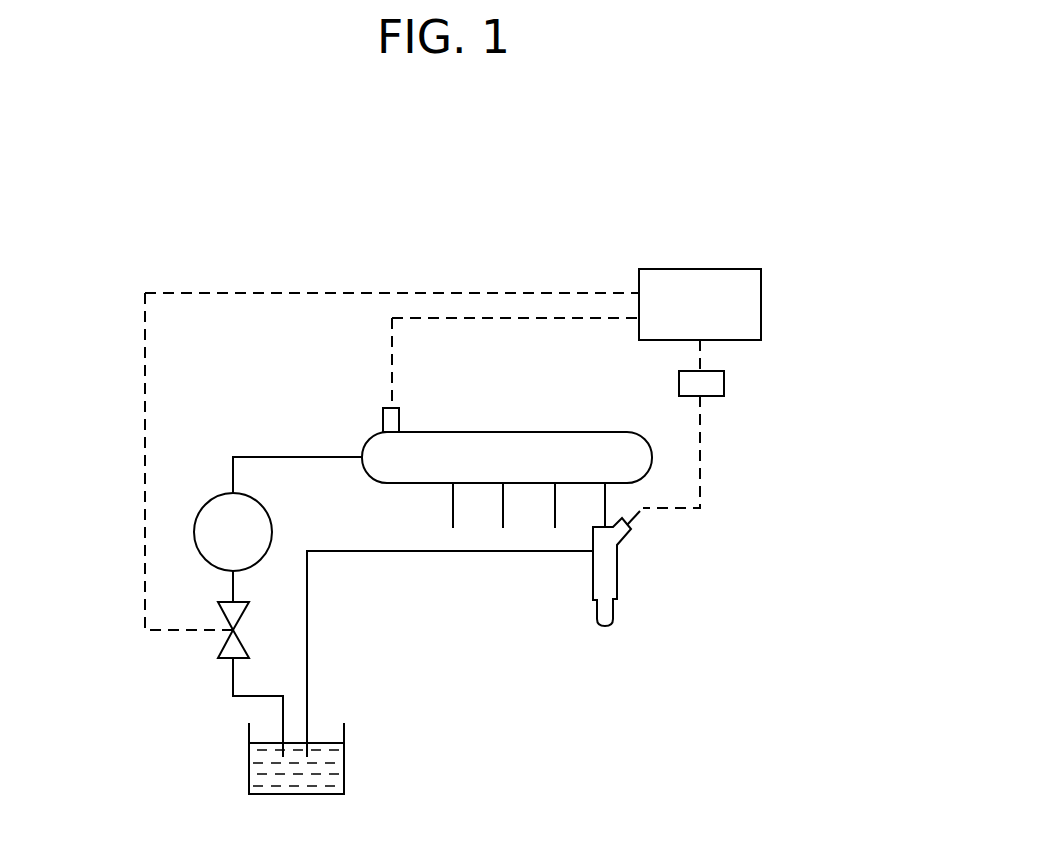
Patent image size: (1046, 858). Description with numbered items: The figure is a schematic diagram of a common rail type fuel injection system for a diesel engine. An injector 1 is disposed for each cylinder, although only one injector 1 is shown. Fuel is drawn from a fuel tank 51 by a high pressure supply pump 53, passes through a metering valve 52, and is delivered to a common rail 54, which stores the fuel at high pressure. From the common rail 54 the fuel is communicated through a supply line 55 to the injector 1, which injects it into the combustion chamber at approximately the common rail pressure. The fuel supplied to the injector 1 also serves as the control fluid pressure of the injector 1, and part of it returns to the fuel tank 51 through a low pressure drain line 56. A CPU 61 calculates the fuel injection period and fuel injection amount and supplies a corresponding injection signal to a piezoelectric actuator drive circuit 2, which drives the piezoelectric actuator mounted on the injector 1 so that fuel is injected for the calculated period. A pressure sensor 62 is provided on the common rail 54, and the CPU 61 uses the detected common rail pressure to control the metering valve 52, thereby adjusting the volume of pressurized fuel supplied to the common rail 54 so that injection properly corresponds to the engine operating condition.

The injector 1 is at (617, 580).
The piezoelectric actuator drive circuit 2 is at (724, 383).
The fuel tank 51 is at (344, 768).
The metering valve 52 is at (230, 637).
The high pressure supply pump 53 is at (194, 537).
The common rail 54 is at (650, 452).
The supply line 55 is at (605, 500).
The low pressure drain line 56 is at (397, 551).
The CPU 61 is at (700, 269).
The pressure sensor 62 is at (383, 418).